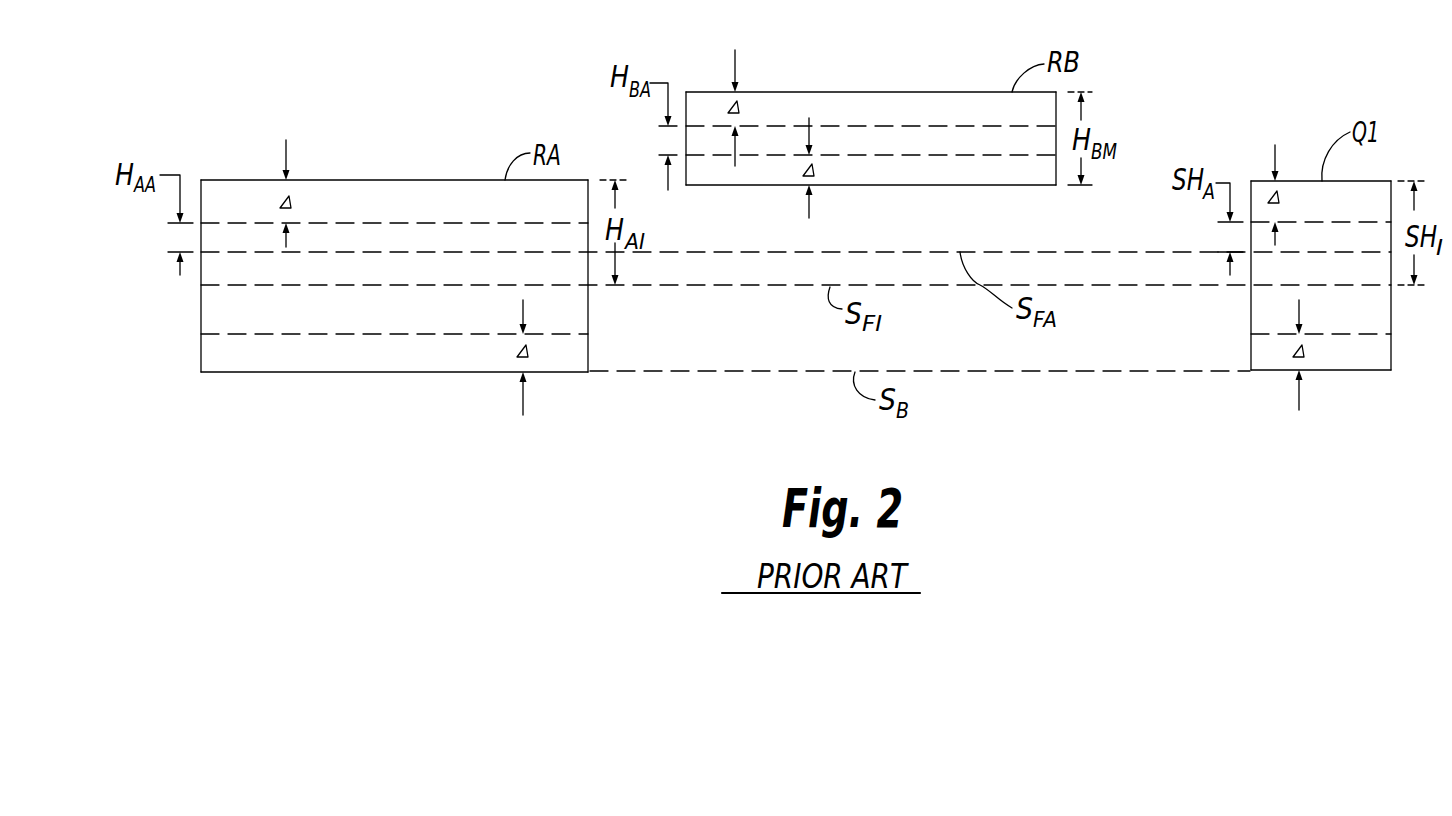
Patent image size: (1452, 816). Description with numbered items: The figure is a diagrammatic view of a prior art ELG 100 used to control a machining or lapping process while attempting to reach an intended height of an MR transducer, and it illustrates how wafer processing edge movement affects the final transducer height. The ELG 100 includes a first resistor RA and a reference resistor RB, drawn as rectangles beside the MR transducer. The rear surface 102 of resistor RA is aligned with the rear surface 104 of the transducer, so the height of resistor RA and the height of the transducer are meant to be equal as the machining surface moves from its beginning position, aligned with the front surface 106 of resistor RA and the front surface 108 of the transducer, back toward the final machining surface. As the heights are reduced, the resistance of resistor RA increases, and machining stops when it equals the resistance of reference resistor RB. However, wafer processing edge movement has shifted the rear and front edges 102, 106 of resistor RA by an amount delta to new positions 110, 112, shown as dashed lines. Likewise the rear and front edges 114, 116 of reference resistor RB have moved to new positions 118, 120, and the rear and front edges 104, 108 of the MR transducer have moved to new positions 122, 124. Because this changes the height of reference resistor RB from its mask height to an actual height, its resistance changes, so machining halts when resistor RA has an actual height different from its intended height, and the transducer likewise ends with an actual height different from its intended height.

The prior art ELG 100 is at (214, 85).
The rear surface of first resistor RA 102 is at (325, 180).
The rear surface of MR transducer Q1 104 is at (1297, 181).
The front surface of resistor RA 106 is at (415, 373).
The front surface of MR transducer Q1 108 is at (1358, 372).
The new position of rear edge of resistor RA 110 is at (450, 222).
The new position of front edge of resistor RA 112 is at (290, 335).
The rear edge of reference resistor RB 114 is at (835, 91).
The front edge of reference resistor RB 116 is at (870, 186).
The new position of rear edge of reference resistor RB 118 is at (957, 125).
The new position of front edge of reference resistor RB 120 is at (1000, 155).
The new position of rear edge of MR transducer Q1 122 is at (1355, 222).
The new position of front edge of MR transducer Q1 124 is at (1357, 335).